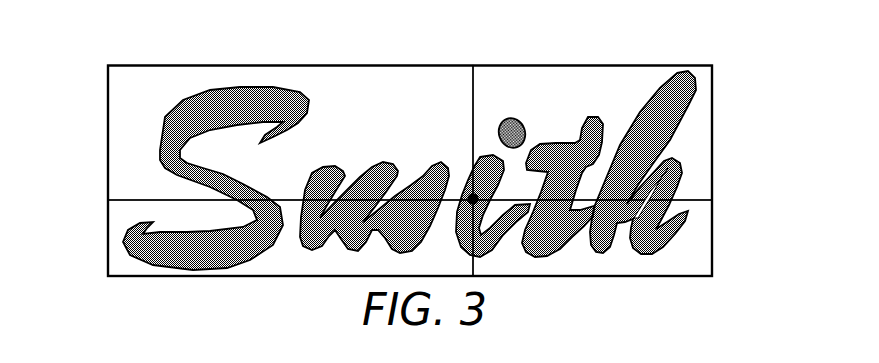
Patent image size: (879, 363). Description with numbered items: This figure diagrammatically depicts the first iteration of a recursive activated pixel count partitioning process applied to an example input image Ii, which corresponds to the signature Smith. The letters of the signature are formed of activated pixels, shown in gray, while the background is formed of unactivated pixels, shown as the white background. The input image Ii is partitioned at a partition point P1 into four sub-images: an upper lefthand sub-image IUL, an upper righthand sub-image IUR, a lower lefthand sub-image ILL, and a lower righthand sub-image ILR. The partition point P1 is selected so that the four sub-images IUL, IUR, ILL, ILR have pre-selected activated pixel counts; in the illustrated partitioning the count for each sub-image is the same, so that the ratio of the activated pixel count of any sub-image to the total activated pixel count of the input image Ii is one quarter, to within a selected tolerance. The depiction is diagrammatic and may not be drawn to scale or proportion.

The upper lefthand sub-image IUL is at (115, 85).
The lower lefthand sub-image ILL is at (115, 217).
The upper righthand sub-image IUR is at (703, 87).
The lower righthand sub-image ILR is at (703, 218).
The input image Ii is at (681, 42).
The partition point P1 is at (472, 192).